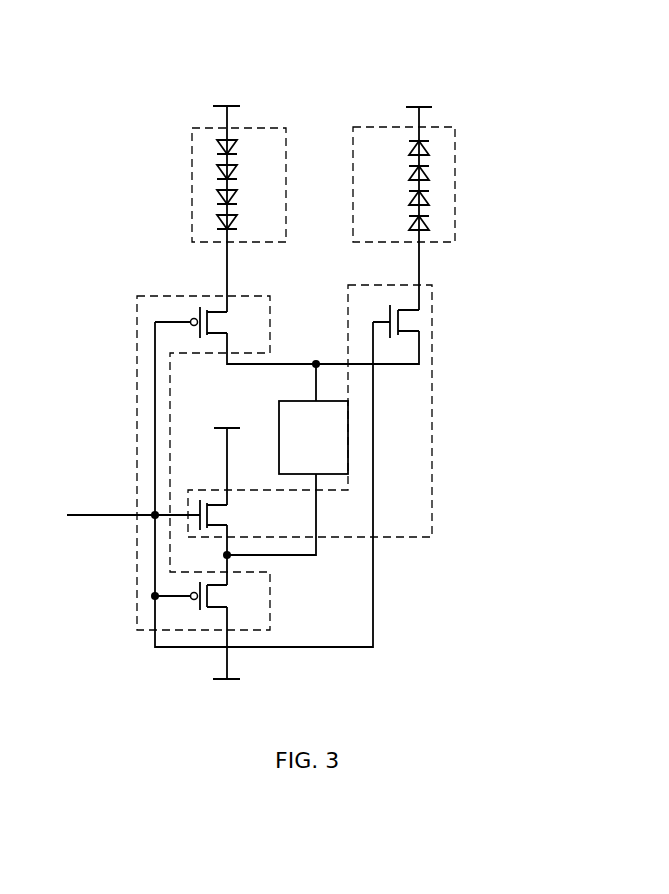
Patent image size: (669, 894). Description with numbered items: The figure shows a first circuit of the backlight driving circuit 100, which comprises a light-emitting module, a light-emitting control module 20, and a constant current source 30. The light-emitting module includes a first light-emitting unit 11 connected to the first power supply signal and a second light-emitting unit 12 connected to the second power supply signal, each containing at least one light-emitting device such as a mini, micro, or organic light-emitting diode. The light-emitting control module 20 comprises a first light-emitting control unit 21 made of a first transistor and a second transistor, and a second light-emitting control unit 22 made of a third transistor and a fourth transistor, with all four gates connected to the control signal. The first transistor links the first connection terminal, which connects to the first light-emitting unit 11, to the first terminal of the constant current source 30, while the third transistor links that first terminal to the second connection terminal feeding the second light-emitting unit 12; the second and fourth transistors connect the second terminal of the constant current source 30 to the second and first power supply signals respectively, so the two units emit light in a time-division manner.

The backlight driving circuit 100 is at (173, 46).
The first light-emitting unit 11 is at (192, 178).
The second light-emitting unit 12 is at (455, 180).
The light-emitting control module 20 is at (478, 570).
The first light-emitting control unit 21 is at (270, 620).
The second light-emitting control unit 22 is at (390, 538).
The constant current source 30 is at (348, 453).